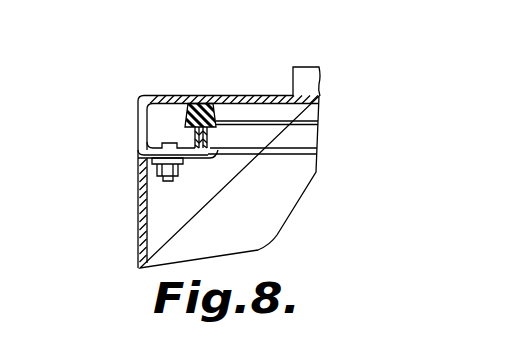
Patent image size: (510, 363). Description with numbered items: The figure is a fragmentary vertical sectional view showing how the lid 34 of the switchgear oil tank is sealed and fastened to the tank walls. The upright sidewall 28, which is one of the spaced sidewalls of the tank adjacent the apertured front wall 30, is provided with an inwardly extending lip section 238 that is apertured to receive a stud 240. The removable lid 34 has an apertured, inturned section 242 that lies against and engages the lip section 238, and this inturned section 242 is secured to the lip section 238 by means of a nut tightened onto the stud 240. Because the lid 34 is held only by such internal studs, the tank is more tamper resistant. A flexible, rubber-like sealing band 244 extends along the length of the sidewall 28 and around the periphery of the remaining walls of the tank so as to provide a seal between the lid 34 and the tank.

The sidewall 28 is at (143, 231).
The front wall 30 is at (265, 228).
The lid 34 is at (249, 94).
The lip section 238 is at (188, 152).
The stud 240 is at (168, 181).
The inturned section 242 is at (151, 138).
The sealing band 244 is at (313, 117).